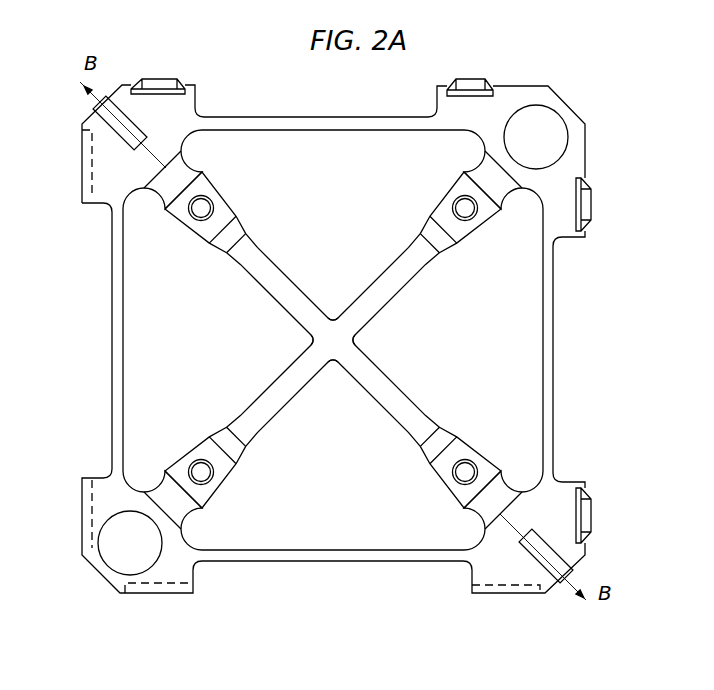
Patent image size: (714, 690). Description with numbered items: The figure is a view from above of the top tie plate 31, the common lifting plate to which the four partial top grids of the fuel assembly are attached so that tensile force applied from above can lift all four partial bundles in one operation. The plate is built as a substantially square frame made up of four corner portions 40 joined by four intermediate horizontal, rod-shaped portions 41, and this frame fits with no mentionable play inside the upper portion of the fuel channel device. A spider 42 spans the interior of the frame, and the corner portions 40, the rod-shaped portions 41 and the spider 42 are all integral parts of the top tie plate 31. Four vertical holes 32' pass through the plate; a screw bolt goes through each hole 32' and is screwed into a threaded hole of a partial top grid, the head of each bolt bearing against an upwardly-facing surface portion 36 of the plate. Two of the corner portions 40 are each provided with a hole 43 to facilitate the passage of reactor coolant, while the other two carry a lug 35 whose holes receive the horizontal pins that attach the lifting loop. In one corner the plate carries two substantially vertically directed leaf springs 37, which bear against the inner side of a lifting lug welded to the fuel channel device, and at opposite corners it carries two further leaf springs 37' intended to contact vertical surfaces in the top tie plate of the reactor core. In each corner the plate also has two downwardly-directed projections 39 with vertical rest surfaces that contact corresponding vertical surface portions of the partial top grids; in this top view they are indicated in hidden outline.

The top tie plate 31 is at (563, 332).
The vertical hole 32' is at (313, 332).
The lug 35 is at (118, 131).
The upwardly-facing surface portion 36 is at (226, 203).
The leaf spring 37 is at (546, 141).
The leaf spring 37' is at (391, 292).
The downwardly-directed projection 39 is at (84, 175).
The corner portion 40 is at (174, 114).
The rod-shaped portion 41 is at (316, 127).
The spider 42 is at (338, 340).
The hole 43 is at (556, 134).